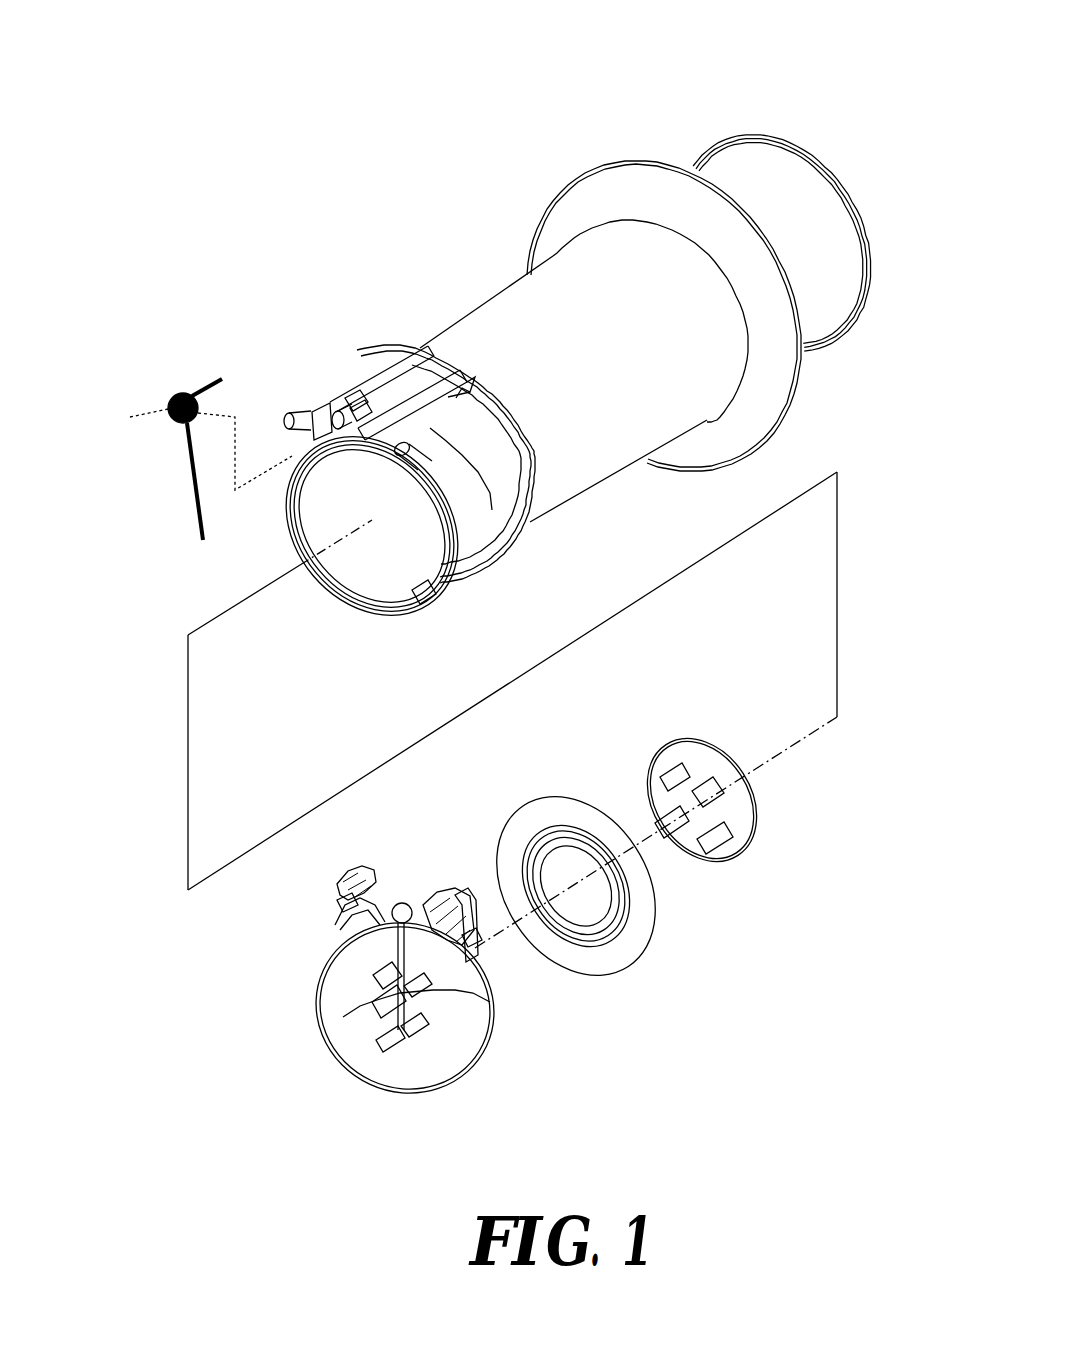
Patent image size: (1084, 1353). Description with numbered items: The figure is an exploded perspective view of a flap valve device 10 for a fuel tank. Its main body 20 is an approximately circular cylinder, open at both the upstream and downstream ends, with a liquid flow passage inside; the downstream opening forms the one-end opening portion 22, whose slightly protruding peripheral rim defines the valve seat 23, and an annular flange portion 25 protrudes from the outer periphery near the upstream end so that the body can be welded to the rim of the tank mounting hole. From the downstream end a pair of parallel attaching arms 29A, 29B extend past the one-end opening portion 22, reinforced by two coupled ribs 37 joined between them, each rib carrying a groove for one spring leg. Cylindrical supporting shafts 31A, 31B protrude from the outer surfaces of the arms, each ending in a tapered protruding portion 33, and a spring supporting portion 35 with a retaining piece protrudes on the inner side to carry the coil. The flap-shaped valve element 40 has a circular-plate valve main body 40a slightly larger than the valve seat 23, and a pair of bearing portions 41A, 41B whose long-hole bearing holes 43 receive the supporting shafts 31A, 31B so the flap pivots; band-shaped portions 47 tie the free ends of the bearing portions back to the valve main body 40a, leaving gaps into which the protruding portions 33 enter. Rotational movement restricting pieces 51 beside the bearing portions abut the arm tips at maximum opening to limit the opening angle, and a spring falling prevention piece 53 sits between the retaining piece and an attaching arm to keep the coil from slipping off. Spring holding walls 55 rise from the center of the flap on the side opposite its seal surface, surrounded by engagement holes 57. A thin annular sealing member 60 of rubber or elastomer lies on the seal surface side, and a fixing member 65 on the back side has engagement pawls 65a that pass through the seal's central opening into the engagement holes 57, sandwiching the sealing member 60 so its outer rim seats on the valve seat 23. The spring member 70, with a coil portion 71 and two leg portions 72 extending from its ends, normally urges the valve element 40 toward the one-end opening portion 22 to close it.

The valve device 10 is at (440, 278).
The main body 20 is at (741, 128).
The one-end opening portion 22 is at (352, 602).
The valve seat 23 is at (396, 608).
The flange portion 25 is at (606, 178).
The attaching arm 29A is at (383, 350).
The attaching arm 29B is at (432, 350).
The supporting shaft 31A is at (308, 410).
The supporting shaft 31B is at (427, 602).
The protruding portion 33 is at (288, 413).
The spring supporting portion 35 is at (333, 410).
The coupled rib 37 is at (356, 392).
The valve element 40 is at (355, 1090).
The valve main body 40a is at (350, 1042).
The bearing portion 41A is at (361, 868).
The bearing portion 41B is at (434, 890).
The bearing hole 43 is at (337, 901).
The band-shaped portion 47 is at (460, 893).
The rotational movement restricting piece 51 is at (340, 928).
The spring falling prevention piece 53 is at (402, 903).
The spring holding wall 55 is at (375, 1002).
The engagement hole 57 is at (432, 990).
The sealing member 60 is at (616, 978).
The fixing member 65 is at (762, 836).
The engagement pawl 65a is at (664, 742).
The spring member 70 is at (173, 392).
The coil portion 71 is at (165, 411).
The leg portion 72 is at (214, 378).